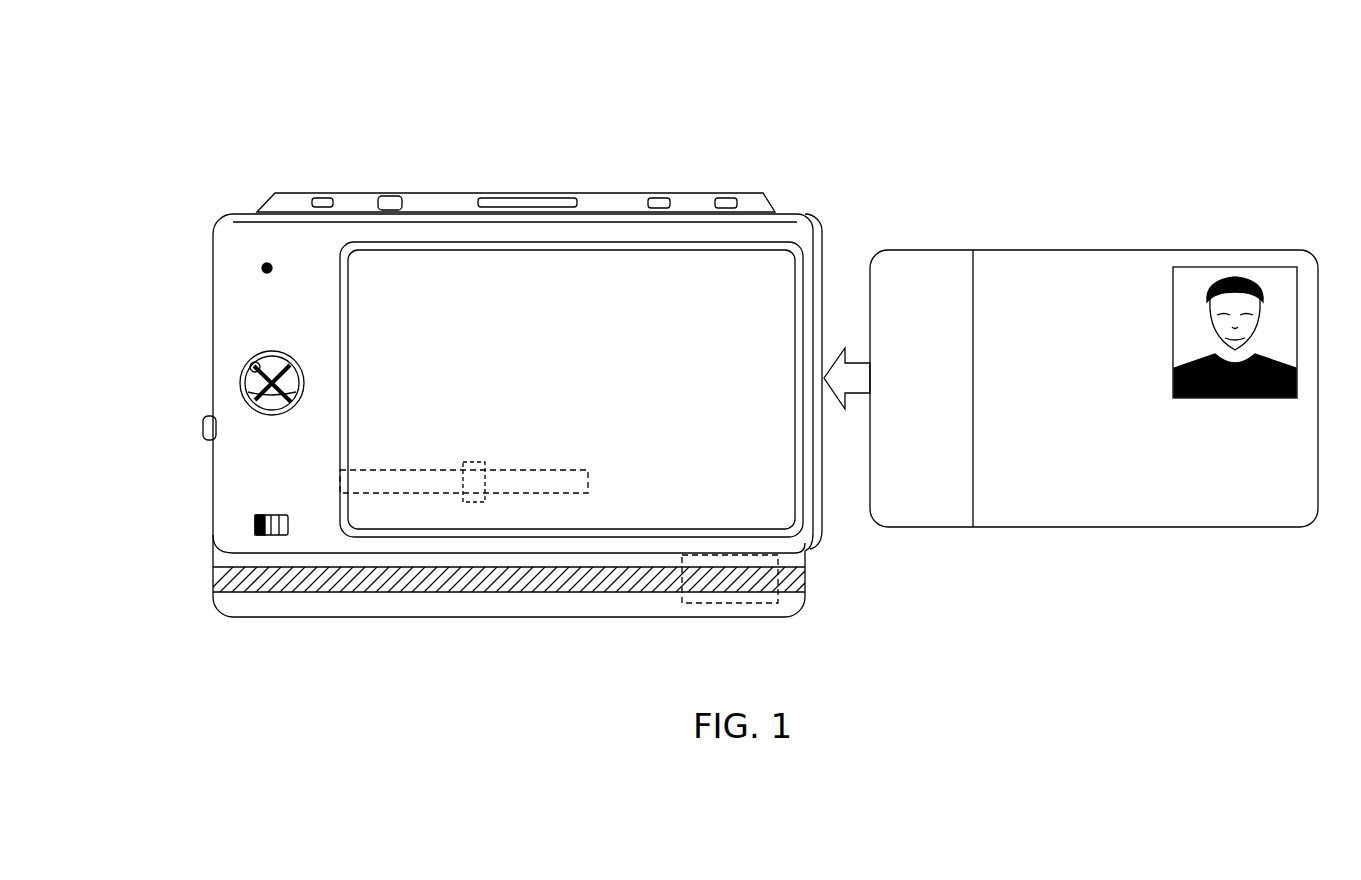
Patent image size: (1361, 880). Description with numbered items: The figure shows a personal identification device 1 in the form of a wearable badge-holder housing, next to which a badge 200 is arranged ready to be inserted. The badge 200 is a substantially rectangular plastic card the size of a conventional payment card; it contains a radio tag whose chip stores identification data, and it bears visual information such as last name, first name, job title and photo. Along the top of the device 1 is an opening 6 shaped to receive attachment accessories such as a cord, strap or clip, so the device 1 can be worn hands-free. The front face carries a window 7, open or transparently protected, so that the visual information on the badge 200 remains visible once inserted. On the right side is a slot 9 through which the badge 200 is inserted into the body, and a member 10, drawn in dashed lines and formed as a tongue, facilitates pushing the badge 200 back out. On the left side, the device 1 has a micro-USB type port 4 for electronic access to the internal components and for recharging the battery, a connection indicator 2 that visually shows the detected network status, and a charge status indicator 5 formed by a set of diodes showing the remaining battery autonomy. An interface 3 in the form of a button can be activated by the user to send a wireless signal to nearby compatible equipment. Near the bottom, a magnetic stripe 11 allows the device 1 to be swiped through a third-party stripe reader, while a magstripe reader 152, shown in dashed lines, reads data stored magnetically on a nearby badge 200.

The personal identification device 1 is at (586, 124).
The connection indicator 2 is at (265, 262).
The interface 3 is at (253, 363).
The port 4 is at (203, 421).
The charge status indicator 5 is at (268, 535).
The opening 6 is at (555, 207).
The window 7 is at (730, 250).
The slot 9 is at (818, 262).
The member for facilitating extraction 10 is at (515, 488).
The magnetic stripe 11 is at (420, 585).
The magstripe reader 152 is at (725, 607).
The badge 200 is at (1076, 140).